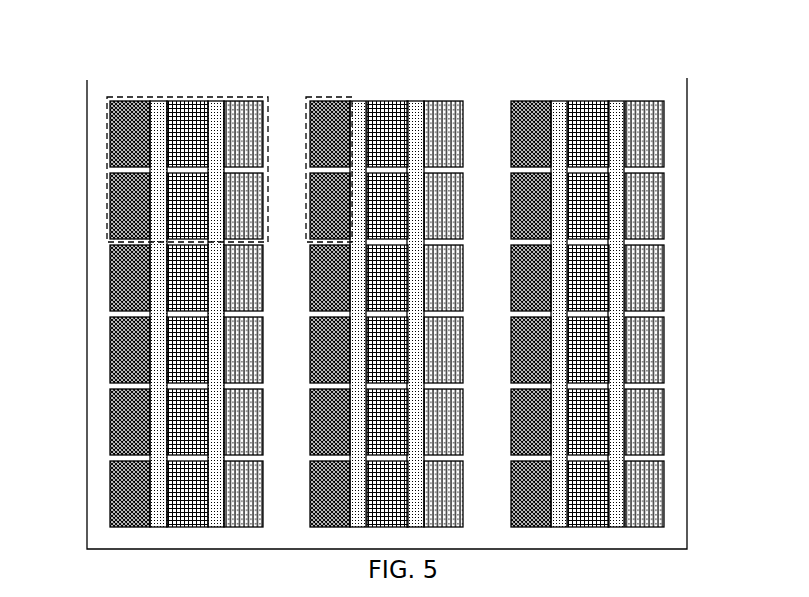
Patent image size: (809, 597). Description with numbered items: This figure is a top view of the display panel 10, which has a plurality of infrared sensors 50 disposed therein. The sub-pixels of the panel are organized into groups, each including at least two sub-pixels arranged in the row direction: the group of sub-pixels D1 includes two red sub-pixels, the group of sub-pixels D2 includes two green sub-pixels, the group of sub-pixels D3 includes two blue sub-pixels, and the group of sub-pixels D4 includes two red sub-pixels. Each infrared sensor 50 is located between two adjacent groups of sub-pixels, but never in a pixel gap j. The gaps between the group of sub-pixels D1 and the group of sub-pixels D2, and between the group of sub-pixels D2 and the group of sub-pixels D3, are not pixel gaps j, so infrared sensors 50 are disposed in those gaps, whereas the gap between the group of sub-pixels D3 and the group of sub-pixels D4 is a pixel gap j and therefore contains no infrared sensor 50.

The display panel 10 is at (687, 78).
The infrared sensor 50 is at (158, 101).
The group of sub-pixels D1 is at (110, 95).
The group of sub-pixels D2 is at (186, 97).
The group of sub-pixels D3 is at (268, 97).
The group of sub-pixels D4 is at (352, 100).
The pixel gap j is at (199, 138).